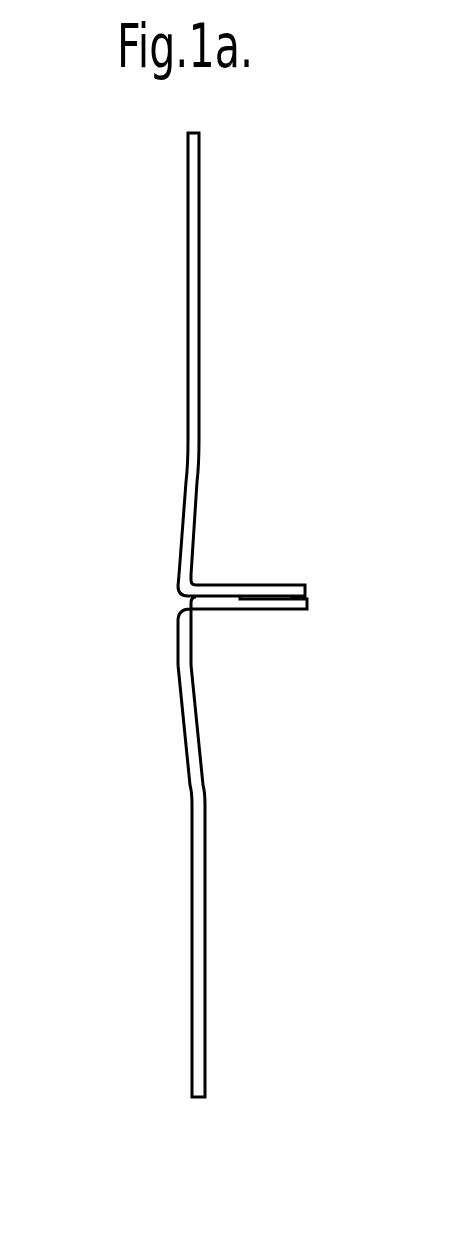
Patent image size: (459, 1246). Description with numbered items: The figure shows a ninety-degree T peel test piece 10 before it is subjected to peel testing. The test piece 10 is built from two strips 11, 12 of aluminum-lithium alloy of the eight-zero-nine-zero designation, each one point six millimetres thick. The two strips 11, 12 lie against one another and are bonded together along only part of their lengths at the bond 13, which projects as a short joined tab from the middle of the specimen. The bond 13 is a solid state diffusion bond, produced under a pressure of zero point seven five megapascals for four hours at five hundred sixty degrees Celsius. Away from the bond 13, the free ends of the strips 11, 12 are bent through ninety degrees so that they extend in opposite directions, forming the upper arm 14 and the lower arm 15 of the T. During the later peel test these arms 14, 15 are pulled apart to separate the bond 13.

The T peel test piece 10 is at (108, 348).
The strip 11 is at (185, 546).
The strip 12 is at (238, 603).
The bond 13 is at (288, 586).
The arm 14 is at (193, 204).
The arm 15 is at (201, 1034).